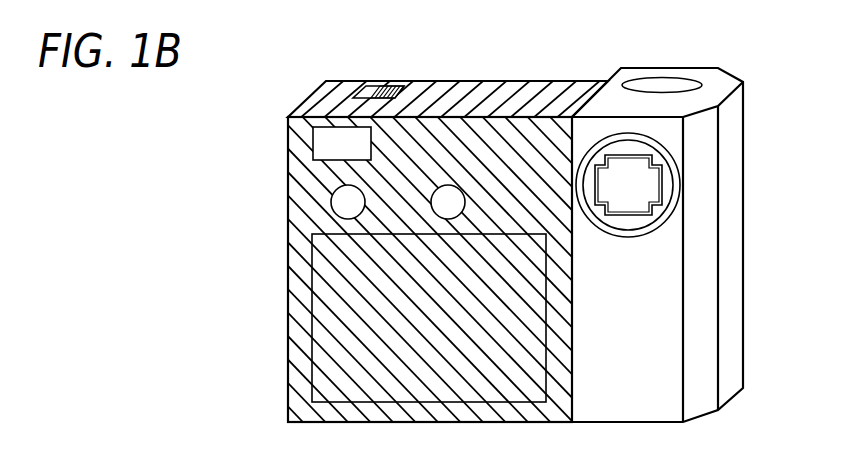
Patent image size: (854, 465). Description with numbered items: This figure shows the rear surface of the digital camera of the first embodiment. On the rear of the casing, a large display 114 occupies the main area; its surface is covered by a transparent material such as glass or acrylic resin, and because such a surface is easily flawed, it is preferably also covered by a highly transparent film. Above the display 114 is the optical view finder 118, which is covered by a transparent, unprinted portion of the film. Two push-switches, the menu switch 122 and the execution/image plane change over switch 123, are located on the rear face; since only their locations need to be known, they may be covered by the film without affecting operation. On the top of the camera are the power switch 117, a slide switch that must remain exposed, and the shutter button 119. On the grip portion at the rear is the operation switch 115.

The display 114 is at (313, 336).
The operation switch 115 is at (645, 188).
The power switch 117 is at (380, 89).
The optical view finder 118 is at (313, 145).
The shutter button 119 is at (661, 83).
The menu switch 122 is at (342, 203).
The execution/image plane change over switch 123 is at (448, 202).